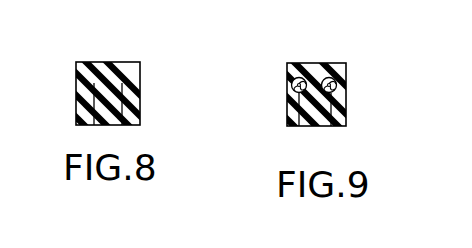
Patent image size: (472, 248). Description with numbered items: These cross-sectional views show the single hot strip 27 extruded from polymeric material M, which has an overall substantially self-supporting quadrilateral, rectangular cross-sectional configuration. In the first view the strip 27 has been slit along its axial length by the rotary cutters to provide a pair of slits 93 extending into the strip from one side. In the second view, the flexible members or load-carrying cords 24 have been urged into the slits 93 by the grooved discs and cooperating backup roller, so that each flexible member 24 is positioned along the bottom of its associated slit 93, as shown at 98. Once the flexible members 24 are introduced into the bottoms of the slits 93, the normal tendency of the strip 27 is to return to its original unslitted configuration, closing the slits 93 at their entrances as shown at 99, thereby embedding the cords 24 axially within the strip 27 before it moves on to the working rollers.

In FIG. 8, the polymeric material M is at (82, 63).
In FIG. 9, the polymeric material M is at (311, 63).
In FIG. 8, the single strip 27 is at (118, 63).
In FIG. 9, the single strip 27 is at (328, 63).
In FIG. 8, the slits 93 is at (96, 103).
In FIG. 9, the slits 93 is at (298, 110).
In FIG. 9, the flexible members 24 is at (293, 79).
In FIG. 9, the flexible member positioned at slit bottom 98 is at (352, 68).
In FIG. 9, the closed slit entrance 99 is at (294, 134).